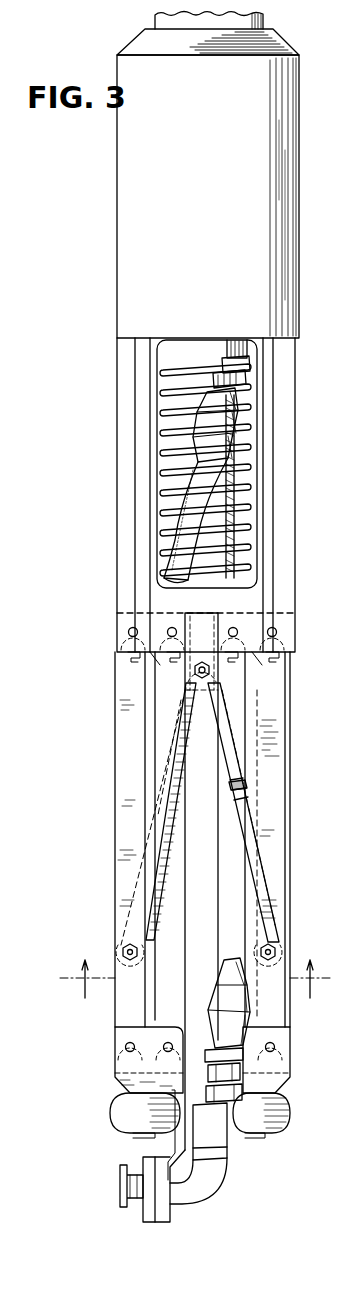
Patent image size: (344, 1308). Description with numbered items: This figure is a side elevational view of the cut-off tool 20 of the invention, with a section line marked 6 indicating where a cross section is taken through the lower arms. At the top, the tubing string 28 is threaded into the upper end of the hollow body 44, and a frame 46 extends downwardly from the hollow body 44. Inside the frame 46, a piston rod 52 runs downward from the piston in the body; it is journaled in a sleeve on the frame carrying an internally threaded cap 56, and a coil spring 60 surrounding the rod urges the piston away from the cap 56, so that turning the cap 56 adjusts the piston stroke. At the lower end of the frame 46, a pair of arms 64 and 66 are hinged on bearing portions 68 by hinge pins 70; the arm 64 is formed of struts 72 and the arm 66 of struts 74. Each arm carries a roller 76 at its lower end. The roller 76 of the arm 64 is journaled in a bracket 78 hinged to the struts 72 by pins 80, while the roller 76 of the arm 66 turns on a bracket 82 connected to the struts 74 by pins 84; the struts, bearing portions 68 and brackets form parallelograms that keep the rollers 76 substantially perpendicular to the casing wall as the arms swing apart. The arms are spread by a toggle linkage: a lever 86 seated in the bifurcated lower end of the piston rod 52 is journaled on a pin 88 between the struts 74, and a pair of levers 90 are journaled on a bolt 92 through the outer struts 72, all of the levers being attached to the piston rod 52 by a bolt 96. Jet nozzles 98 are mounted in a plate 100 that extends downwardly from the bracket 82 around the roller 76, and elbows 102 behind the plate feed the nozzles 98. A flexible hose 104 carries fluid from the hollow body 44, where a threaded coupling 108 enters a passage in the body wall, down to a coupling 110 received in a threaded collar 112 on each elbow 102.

The cut-off tool 20 is at (108, 394).
The tubing string 28 is at (155, 19).
The hollow body 44 is at (140, 195).
The frame 46 is at (120, 584).
The piston rod 52 is at (198, 622).
The cap 56 is at (215, 513).
The coil spring 60 is at (160, 437).
The arm 64 is at (289, 896).
The arm 66 is at (108, 879).
The bearing portions 68 is at (250, 652).
The hinge pins 70 is at (270, 627).
The struts 72 is at (270, 712).
The struts 74 is at (155, 732).
The roller 76 is at (265, 1112).
The bracket 78 is at (283, 1063).
The pins 80 is at (273, 1043).
The bracket 82 is at (125, 1066).
The pins 84 is at (165, 1044).
The lever 86 is at (150, 827).
The pin 88 is at (125, 947).
The levers 90 is at (238, 835).
The bolt 92 is at (273, 947).
The bolt 96 is at (203, 660).
The jet nozzles 98 is at (121, 1188).
The mounting plate 100 is at (172, 1152).
The elbows 102 is at (205, 1184).
The flexible hose 104 is at (195, 525).
The threaded coupling 108 is at (228, 340).
The coupling 110 is at (243, 1076).
The collar 112 is at (222, 1146).
The section line 6 is at (197, 979).